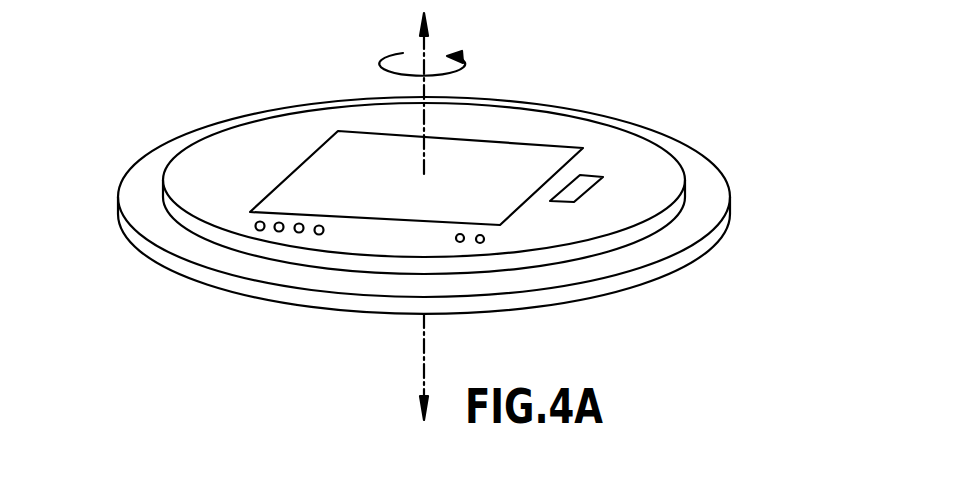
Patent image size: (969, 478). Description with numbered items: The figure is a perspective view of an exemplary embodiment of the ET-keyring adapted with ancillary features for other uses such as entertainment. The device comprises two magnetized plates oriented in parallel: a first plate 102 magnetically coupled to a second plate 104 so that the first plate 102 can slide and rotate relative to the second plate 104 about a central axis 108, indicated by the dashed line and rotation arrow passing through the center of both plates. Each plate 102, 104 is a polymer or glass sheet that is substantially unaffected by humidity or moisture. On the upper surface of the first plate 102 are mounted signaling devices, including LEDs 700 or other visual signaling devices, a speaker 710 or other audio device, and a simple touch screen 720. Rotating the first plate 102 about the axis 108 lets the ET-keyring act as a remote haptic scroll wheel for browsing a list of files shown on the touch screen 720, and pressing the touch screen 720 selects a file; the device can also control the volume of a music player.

The first plate 102 is at (317, 110).
The second plate 104 is at (118, 205).
The axis 108 is at (422, 352).
The LEDs 700 is at (318, 235).
The speaker 710 is at (590, 193).
The touch screen 720 is at (563, 150).